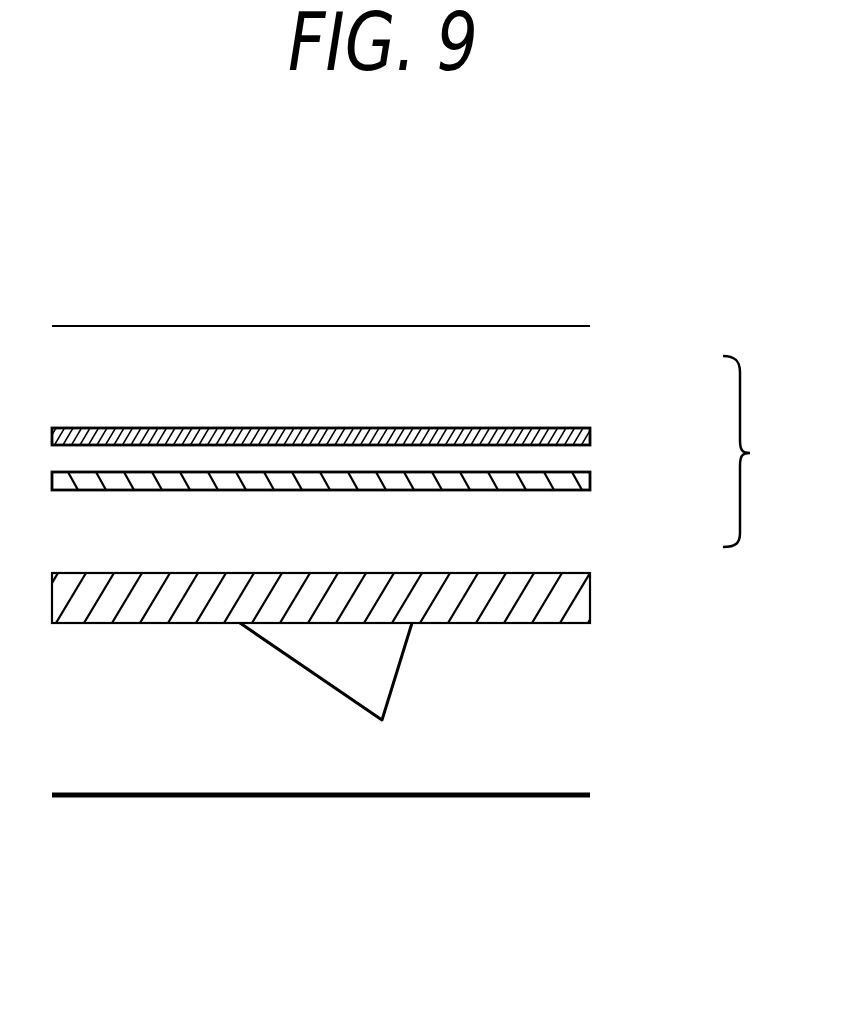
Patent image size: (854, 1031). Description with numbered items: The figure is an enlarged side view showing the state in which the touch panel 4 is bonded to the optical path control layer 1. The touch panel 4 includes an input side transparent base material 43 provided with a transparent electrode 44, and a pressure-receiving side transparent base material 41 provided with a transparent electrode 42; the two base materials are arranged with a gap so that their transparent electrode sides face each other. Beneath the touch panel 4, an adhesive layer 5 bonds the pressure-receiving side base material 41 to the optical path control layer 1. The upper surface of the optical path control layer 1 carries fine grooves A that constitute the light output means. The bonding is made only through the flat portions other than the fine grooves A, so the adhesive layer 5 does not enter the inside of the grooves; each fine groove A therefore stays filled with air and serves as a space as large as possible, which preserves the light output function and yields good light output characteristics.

The optical path control layer 1 is at (578, 705).
The touch panel 4 is at (753, 451).
The pressure-receiving side transparent base material 41 is at (577, 538).
The transparent electrode 42 is at (586, 486).
The input side transparent base material 43 is at (580, 386).
The transparent electrode 44 is at (592, 436).
The adhesive layer 5 is at (590, 601).
The fine grooves A is at (357, 707).